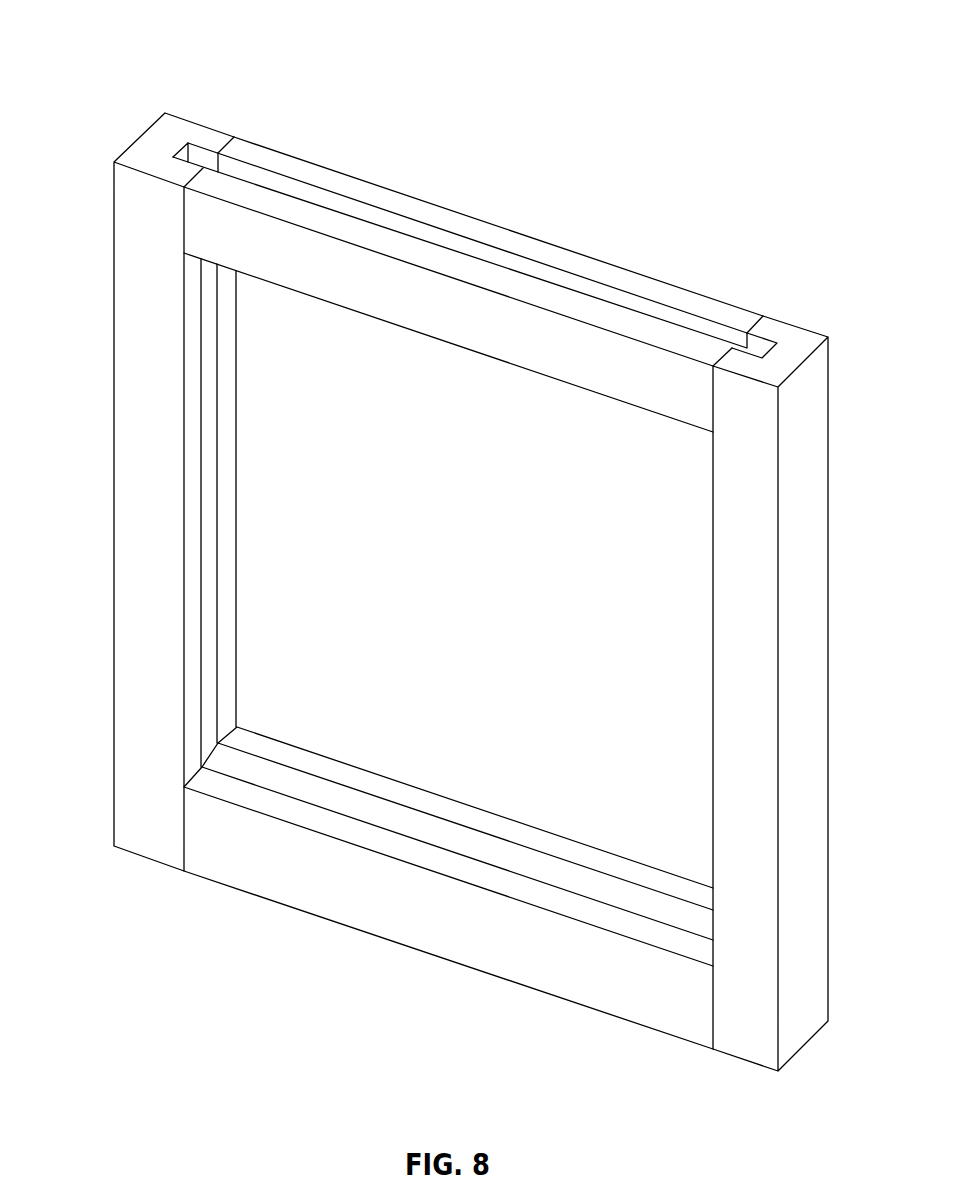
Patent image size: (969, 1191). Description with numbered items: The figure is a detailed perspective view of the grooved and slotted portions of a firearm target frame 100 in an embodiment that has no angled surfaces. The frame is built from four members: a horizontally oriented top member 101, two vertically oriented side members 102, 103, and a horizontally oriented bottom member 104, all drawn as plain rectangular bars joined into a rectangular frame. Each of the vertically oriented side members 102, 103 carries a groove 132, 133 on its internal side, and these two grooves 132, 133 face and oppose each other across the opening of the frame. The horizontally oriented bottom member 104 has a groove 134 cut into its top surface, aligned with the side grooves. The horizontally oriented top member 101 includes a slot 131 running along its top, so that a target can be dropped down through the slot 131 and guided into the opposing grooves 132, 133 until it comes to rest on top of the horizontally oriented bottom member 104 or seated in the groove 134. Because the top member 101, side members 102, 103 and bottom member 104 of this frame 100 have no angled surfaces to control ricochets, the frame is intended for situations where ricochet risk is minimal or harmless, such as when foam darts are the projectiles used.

The firearm target frame 100 is at (186, 31).
The horizontally oriented top member 101 is at (348, 293).
The vertically oriented side member 102 is at (127, 568).
The vertically oriented side member 103 is at (817, 657).
The horizontally oriented bottom member 104 is at (325, 905).
The slot 131 is at (597, 283).
The groove 132 is at (186, 152).
The groove 133 is at (762, 335).
The groove 134 is at (472, 831).